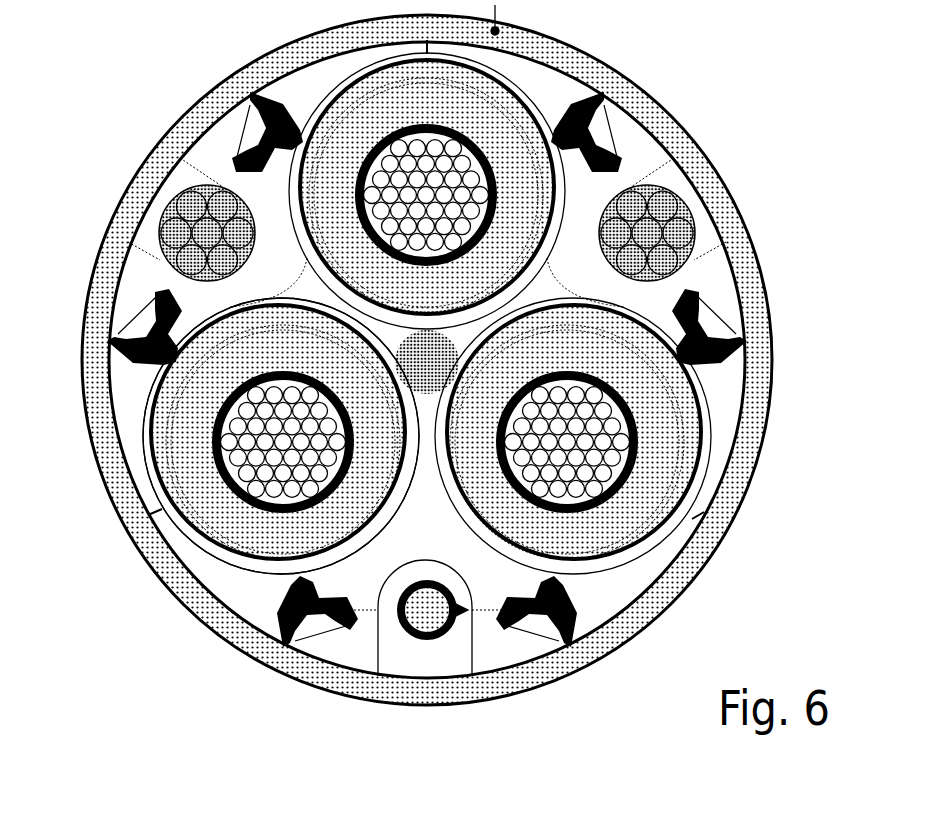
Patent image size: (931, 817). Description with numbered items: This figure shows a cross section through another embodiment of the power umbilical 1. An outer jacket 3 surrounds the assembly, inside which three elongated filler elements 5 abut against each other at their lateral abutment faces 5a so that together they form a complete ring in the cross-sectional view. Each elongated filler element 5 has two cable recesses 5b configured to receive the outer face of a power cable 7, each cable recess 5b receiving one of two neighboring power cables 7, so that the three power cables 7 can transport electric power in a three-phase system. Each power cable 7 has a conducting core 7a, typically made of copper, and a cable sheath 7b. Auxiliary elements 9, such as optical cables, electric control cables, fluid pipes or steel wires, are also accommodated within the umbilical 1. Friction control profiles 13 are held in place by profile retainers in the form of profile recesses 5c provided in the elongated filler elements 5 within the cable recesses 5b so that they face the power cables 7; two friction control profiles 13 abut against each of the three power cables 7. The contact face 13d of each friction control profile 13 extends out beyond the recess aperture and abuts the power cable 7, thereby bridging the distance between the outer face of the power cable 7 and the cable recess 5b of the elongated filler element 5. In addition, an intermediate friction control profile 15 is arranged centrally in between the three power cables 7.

The umbilical 1 is at (123, 81).
The outer jacket 3 is at (310, 673).
The elongated filler element 5 is at (134, 289).
The lateral abutment face 5a is at (153, 517).
The cable recess 5b is at (287, 203).
The profile recess 5c is at (150, 303).
The power cable 7 is at (600, 574).
The conducting core 7a is at (590, 418).
The cable sheath 7b is at (667, 525).
The auxiliary element 9 is at (647, 228).
The friction control profile 13 is at (297, 593).
The contact face 13d is at (660, 368).
The intermediate friction control profile 15 is at (435, 362).